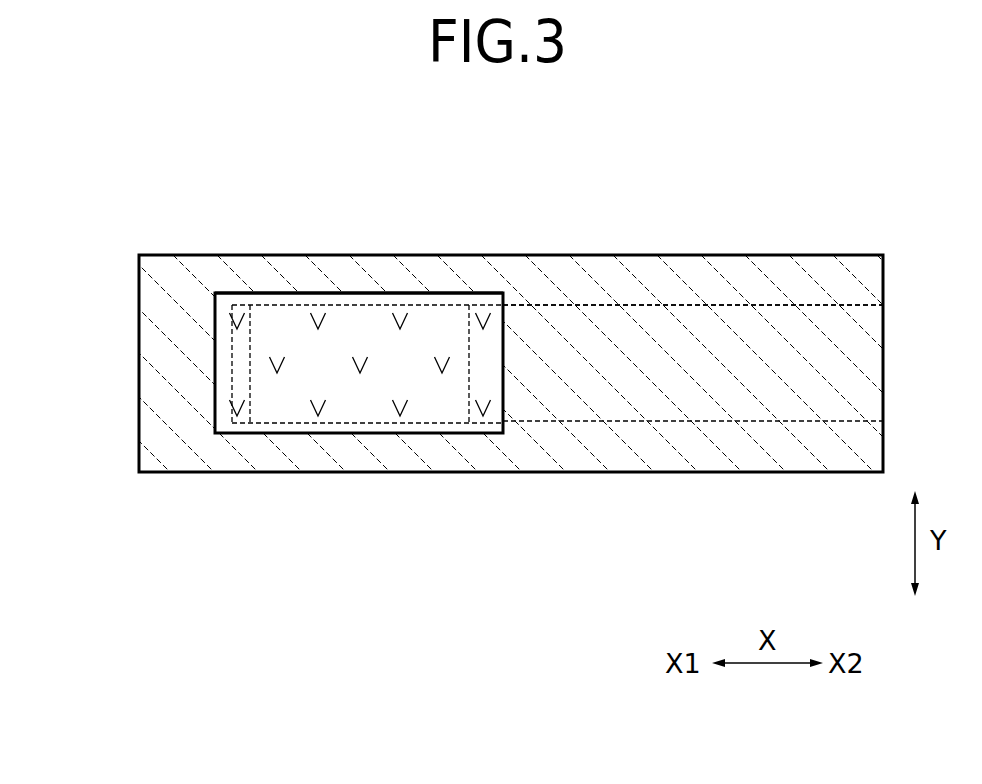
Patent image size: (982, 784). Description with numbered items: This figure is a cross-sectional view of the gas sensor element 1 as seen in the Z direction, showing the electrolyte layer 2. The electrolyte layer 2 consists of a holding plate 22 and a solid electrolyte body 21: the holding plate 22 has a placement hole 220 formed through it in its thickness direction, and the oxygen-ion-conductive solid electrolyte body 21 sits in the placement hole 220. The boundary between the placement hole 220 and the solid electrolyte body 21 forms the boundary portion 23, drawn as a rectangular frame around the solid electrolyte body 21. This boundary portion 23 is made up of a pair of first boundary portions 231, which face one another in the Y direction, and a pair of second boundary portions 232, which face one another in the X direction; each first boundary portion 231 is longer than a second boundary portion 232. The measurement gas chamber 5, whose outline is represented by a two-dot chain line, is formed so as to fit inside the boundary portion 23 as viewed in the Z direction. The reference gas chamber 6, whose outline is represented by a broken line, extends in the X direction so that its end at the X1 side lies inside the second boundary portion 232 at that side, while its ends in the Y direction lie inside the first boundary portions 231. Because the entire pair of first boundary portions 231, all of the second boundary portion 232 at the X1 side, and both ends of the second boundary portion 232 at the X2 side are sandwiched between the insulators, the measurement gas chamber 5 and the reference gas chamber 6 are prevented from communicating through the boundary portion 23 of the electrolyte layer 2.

The gas sensor element 1 is at (491, 362).
The electrolyte layer 2 is at (672, 342).
The solid electrolyte body 21 is at (361, 395).
The holding plate 22 is at (567, 363).
The placement hole 220 is at (219, 333).
The boundary portion 23 is at (310, 382).
The first boundary portion 231 is at (272, 562).
The second boundary portion 232 is at (213, 398).
The measurement gas chamber 5 is at (383, 304).
The reference gas chamber 6 is at (540, 303).